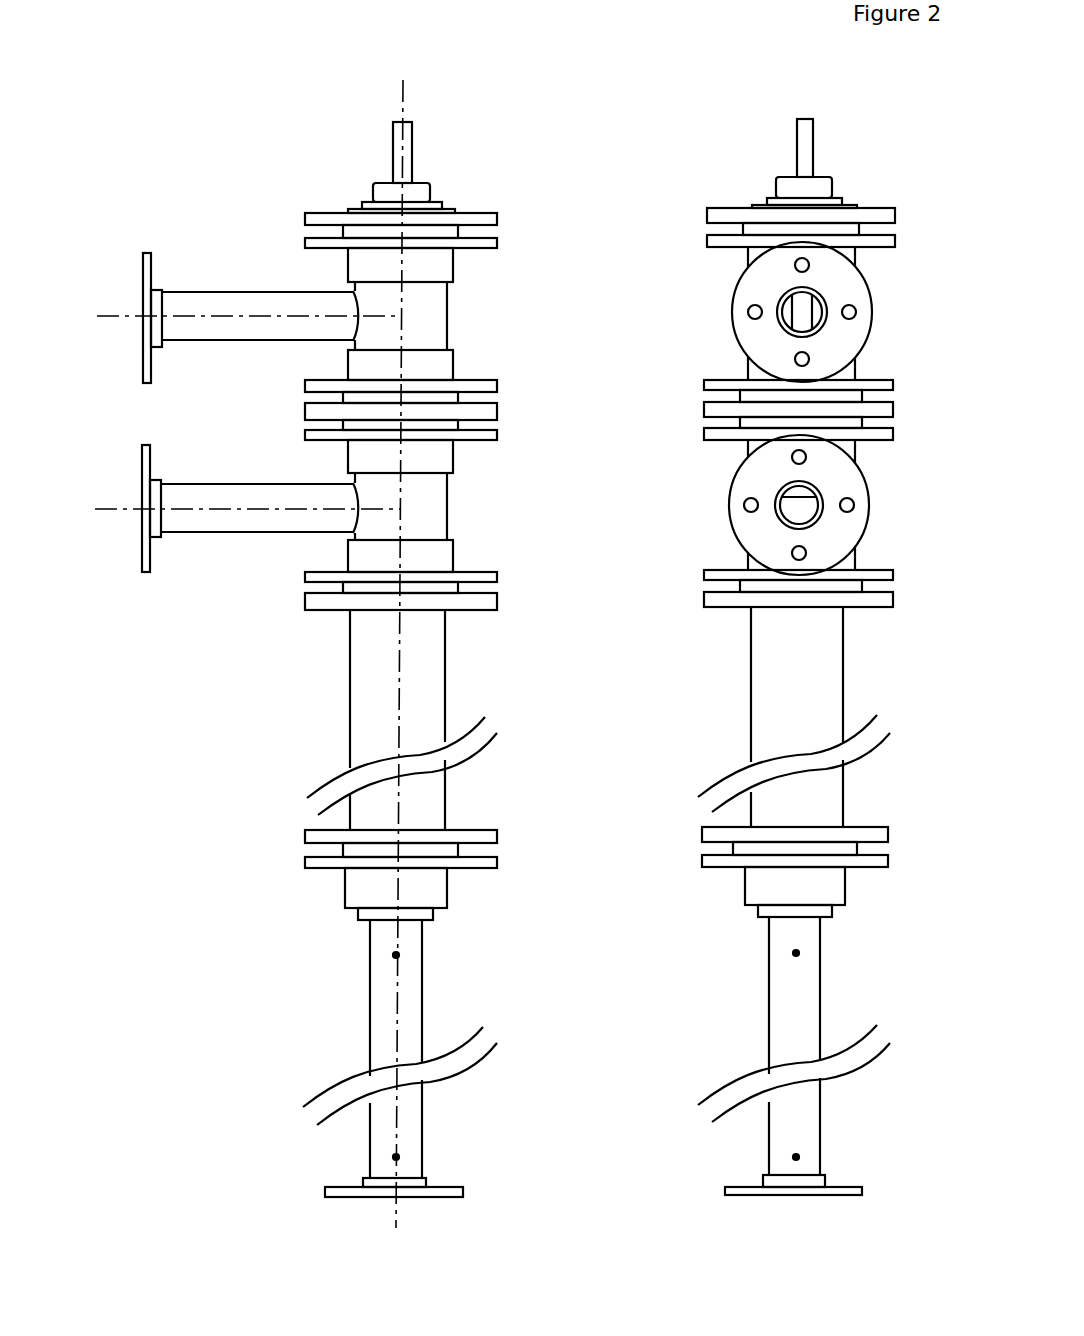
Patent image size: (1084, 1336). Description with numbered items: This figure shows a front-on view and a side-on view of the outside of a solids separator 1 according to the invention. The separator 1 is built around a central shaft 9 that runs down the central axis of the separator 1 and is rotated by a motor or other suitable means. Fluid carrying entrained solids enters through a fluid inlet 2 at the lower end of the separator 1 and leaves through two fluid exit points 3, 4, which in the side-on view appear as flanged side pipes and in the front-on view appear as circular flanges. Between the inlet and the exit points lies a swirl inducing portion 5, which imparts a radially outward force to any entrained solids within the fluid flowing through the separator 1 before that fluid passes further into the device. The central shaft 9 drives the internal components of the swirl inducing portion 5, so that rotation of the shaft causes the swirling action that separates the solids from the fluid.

The solids separator 1 is at (447, 702).
The fluid inlet 2 is at (423, 1196).
The fluid exit point 3 is at (143, 302).
The fluid exit point 4 is at (143, 487).
The swirl inducing portion 5 is at (423, 1017).
The central shaft 9 is at (797, 145).